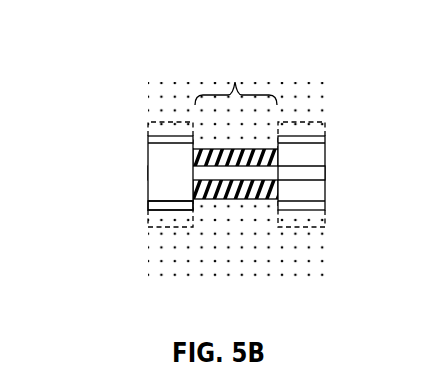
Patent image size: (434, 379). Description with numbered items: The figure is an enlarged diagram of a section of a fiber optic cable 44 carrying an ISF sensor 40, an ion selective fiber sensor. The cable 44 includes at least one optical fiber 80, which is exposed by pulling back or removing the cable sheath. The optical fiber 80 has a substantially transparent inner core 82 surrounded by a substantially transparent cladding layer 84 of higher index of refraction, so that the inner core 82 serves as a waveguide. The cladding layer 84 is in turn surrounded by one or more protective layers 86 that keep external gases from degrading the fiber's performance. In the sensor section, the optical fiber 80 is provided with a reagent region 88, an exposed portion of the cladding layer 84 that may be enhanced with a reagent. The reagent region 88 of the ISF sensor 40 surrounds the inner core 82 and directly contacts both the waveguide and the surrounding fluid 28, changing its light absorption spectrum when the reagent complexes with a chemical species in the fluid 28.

The fiber optic cable 44 is at (82, 163).
The fluid 28 is at (238, 258).
The ISF sensor 40 is at (236, 77).
The optical fiber 80 is at (323, 140).
The inner core 82 is at (150, 173).
The cladding layer 84 is at (157, 157).
The protective layers 86 is at (157, 218).
The reagent region 88 is at (225, 187).